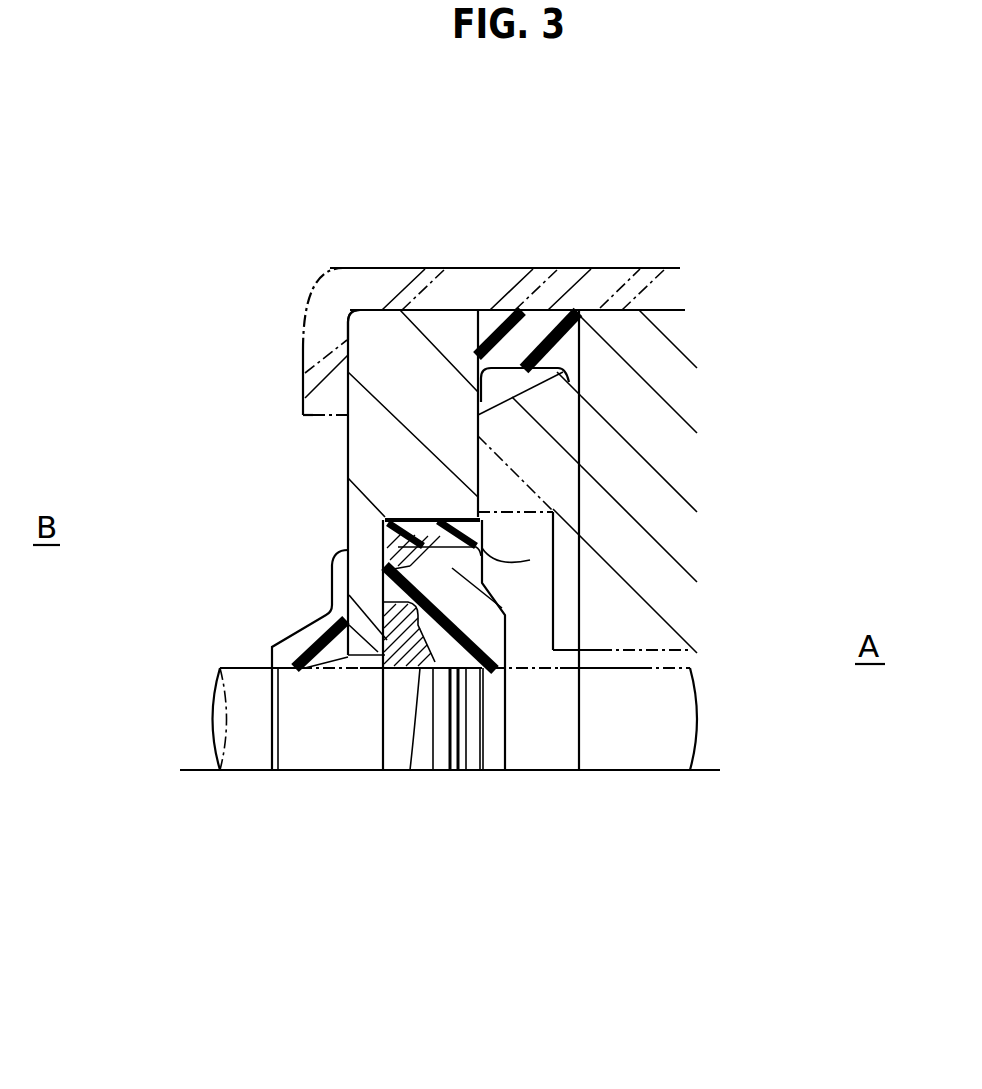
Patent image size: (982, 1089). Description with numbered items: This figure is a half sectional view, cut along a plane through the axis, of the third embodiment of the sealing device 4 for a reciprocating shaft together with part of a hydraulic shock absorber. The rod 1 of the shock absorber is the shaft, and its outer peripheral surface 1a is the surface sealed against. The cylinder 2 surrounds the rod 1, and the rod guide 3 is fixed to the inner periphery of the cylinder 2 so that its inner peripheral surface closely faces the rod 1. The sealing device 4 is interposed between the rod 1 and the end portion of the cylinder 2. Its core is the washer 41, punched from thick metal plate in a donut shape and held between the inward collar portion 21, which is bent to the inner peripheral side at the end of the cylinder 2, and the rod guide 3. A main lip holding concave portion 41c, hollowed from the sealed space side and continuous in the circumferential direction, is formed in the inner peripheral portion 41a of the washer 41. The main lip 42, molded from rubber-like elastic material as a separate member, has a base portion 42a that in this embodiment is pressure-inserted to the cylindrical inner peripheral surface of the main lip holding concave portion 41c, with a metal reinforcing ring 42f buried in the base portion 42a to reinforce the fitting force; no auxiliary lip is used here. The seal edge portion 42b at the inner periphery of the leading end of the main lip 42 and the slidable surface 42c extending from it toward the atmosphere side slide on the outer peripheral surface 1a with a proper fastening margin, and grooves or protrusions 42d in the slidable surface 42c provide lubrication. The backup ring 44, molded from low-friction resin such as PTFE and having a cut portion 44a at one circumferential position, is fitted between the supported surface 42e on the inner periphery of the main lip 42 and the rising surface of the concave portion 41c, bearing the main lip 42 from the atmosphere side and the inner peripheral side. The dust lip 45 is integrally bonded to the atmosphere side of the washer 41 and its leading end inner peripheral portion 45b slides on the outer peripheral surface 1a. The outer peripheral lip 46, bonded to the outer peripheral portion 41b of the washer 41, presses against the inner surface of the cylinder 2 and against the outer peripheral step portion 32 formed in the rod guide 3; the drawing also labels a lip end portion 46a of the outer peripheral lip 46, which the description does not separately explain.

The rod 1 is at (205, 697).
The outer peripheral surface of the rod 1a is at (235, 668).
The cylinder 2 is at (630, 270).
The inward collar portion 21 is at (313, 352).
The rod guide 3 is at (660, 428).
The outer peripheral step portion 32 is at (565, 318).
The sealing device 4 is at (335, 443).
The washer 41 is at (405, 368).
The inner peripheral portion of the washer 41a is at (365, 620).
The outer peripheral portion of the washer 41b is at (377, 337).
The main lip holding concave portion 41c is at (483, 562).
The main lip 42 is at (517, 622).
The base portion 42a is at (387, 572).
The seal edge portion 42b is at (452, 672).
The slidable surface 42c is at (470, 690).
The grooves or protrusions 42d is at (475, 745).
The supported surface 42e is at (360, 645).
The metal reinforcing ring 42f is at (408, 517).
The backup ring 44 is at (376, 660).
The cut portion 44a is at (413, 700).
The dust lip 45 is at (257, 630).
The leading end inner peripheral portion 45b is at (300, 658).
The outer peripheral lip 46 is at (512, 333).
The seal lip end 46a is at (490, 340).